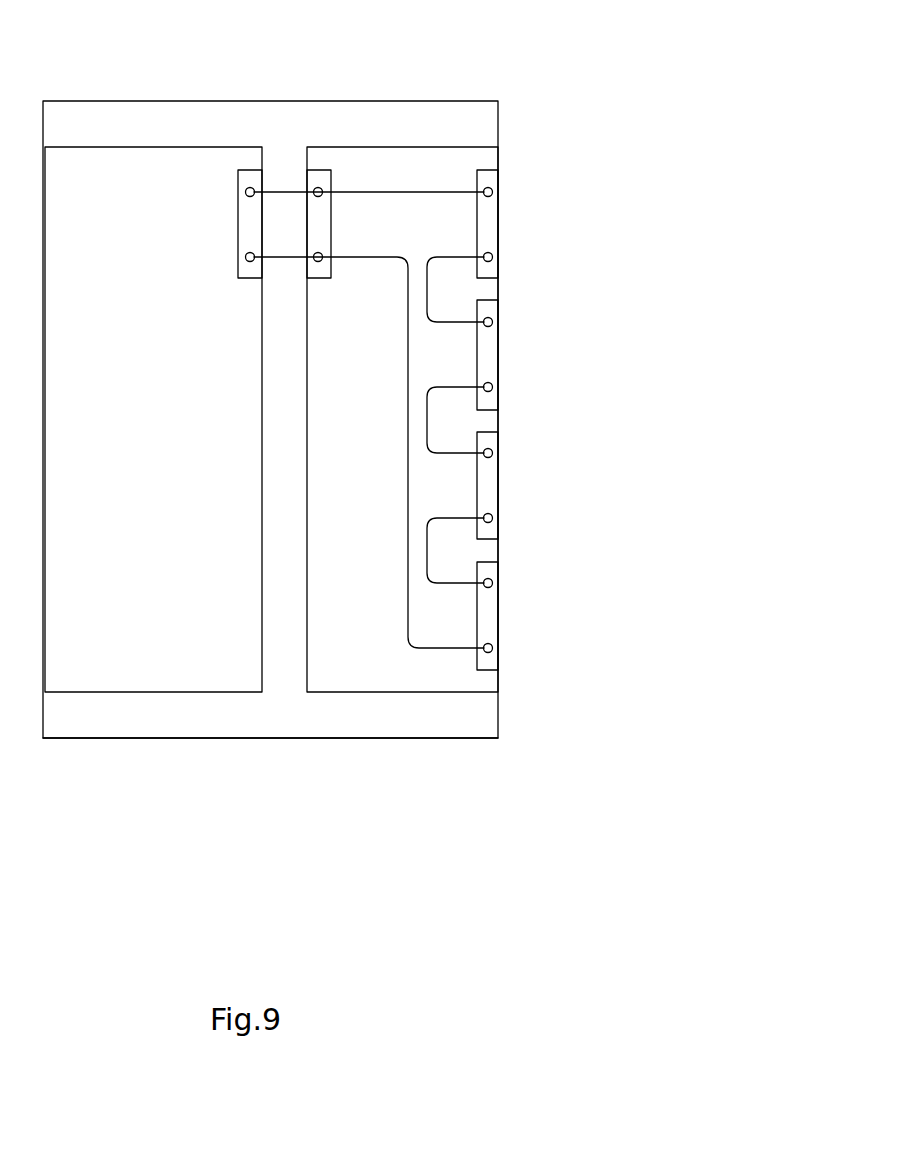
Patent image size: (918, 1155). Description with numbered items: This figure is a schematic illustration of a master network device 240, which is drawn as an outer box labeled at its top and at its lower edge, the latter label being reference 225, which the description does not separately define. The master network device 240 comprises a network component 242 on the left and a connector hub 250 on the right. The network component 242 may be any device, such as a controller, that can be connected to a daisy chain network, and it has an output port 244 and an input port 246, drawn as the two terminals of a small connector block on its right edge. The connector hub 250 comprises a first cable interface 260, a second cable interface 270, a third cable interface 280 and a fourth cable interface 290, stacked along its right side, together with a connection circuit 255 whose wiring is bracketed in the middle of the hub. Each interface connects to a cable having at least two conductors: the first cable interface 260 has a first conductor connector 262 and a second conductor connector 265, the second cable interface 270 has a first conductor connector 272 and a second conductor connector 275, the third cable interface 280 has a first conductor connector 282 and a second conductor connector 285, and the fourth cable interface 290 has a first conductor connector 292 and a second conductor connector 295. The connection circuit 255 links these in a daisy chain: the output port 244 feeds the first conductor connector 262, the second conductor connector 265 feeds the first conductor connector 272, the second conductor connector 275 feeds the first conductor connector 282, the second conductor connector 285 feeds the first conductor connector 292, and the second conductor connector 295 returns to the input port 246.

The network 225 is at (383, 738).
The master network device 240 is at (333, 101).
The network component 242 is at (136, 692).
The output port 244 is at (253, 186).
The input port 246 is at (246, 255).
The connector hub 250 is at (310, 692).
The connection circuit 255 is at (425, 161).
The first cable interface 260 is at (534, 220).
The first conductor connector 262 is at (492, 193).
The second conductor connector 265 is at (492, 259).
The second cable interface 270 is at (539, 355).
The first conductor connector 272 is at (492, 323).
The second conductor connector 275 is at (492, 388).
The third cable interface 280 is at (534, 483).
The first conductor connector 282 is at (492, 454).
The second conductor connector 285 is at (492, 519).
The fourth cable interface 290 is at (539, 616).
The first conductor connector 292 is at (492, 584).
The second conductor connector 295 is at (492, 649).